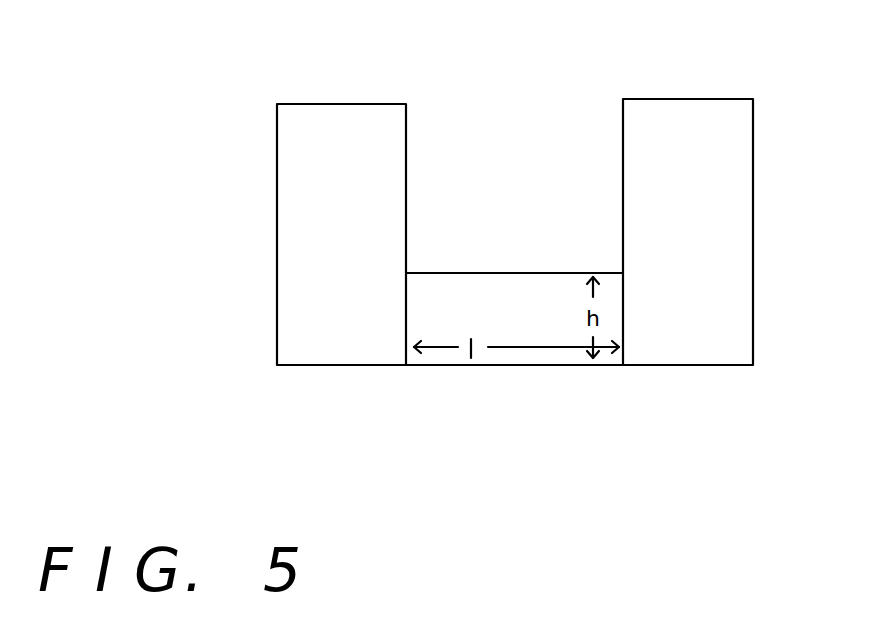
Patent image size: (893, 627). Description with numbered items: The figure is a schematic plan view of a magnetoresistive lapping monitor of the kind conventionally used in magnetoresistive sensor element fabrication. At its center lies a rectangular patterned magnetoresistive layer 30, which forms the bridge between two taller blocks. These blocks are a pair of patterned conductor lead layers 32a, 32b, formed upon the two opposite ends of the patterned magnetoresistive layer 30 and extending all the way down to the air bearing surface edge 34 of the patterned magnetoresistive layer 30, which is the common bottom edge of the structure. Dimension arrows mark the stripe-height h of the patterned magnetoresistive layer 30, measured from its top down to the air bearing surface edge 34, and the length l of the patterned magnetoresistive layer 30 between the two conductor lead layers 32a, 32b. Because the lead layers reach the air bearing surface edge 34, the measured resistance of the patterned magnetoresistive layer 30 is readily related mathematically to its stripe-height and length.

The patterned magnetoresistive (MR) layer 30 is at (463, 285).
The patterned conductor lead layer 32a is at (331, 122).
The patterned conductor lead layer 32b is at (670, 117).
The air bearing surface (ABS) edge 34 is at (452, 378).